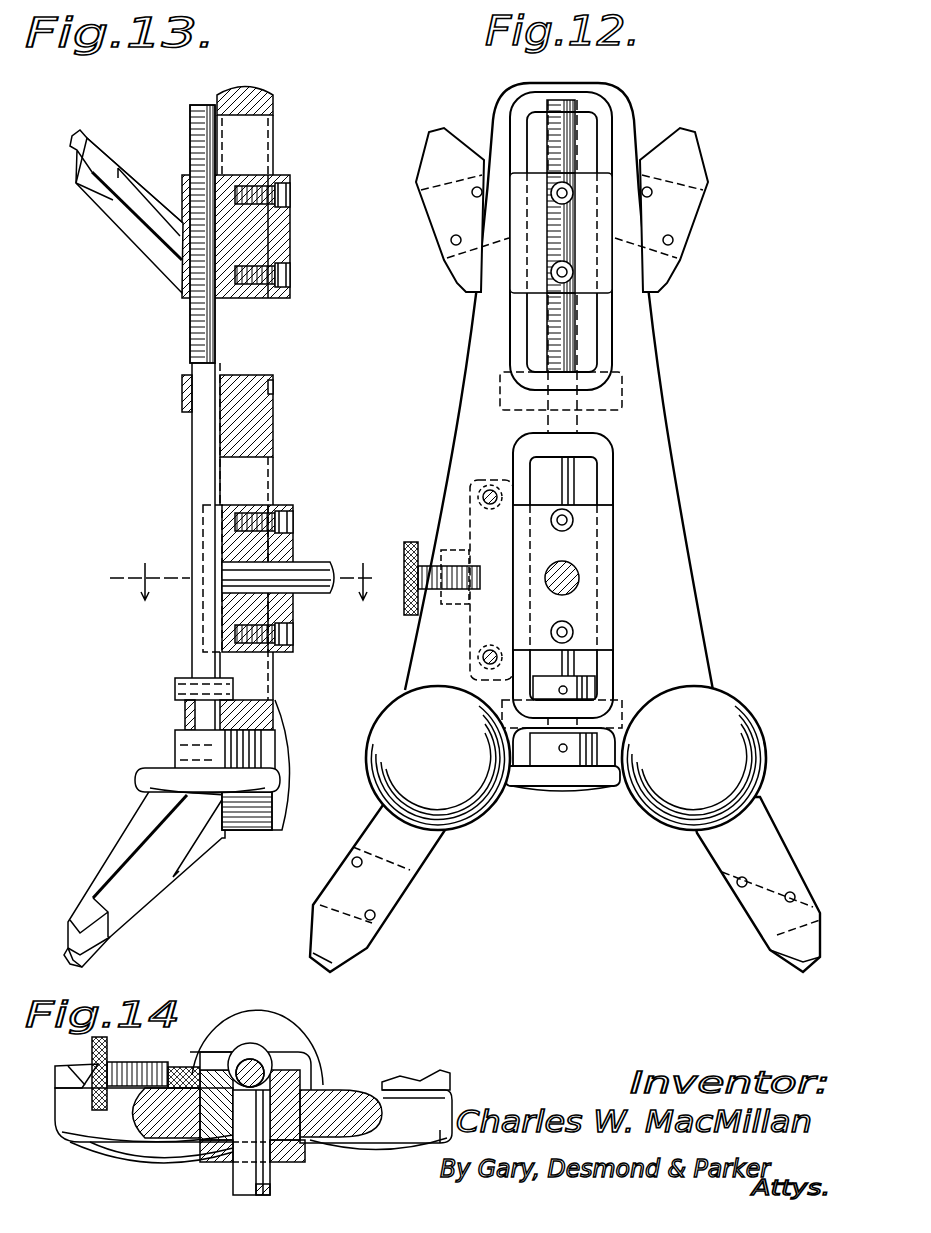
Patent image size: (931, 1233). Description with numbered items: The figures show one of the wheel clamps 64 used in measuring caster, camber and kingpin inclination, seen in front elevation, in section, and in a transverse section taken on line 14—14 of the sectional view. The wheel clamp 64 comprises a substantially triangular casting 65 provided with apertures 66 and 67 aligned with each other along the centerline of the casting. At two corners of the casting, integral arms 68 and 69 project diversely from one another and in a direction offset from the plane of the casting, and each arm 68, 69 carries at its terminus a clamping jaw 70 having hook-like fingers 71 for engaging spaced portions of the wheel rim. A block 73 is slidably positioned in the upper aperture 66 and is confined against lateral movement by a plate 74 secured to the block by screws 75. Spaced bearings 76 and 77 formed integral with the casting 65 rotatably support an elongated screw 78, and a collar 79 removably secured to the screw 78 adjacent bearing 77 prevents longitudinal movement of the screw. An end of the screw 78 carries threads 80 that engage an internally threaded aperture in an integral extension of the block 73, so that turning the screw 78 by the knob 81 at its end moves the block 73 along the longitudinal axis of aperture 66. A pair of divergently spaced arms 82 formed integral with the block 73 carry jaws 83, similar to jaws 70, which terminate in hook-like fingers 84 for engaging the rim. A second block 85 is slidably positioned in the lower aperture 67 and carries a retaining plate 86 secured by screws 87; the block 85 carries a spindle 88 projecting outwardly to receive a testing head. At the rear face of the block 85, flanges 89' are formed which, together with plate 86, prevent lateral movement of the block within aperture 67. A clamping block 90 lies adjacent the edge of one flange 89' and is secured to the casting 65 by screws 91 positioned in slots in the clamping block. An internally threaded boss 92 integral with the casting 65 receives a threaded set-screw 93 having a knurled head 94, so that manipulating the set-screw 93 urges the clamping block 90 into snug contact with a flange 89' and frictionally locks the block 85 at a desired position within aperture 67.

In FIG. 13, the section line 14— 14 is at (242, 567).
In FIG. 12, the wheel clamp 64 is at (702, 434).
In FIG. 12, the triangular casting 65 is at (655, 405).
In FIG. 12, the aperture 66 is at (585, 333).
In FIG. 12, the aperture 67 is at (585, 480).
In FIG. 12, the integral arm 68 is at (425, 848).
In FIG. 12, the integral arm 69 is at (705, 845).
In FIG. 13, the clamping jaw 70 is at (135, 935).
In FIG. 12, the clamping jaw 70 is at (355, 955).
In FIG. 13, the hook-like fingers 71 is at (66, 955).
In FIG. 14, the hook-like fingers 71 is at (419, 1085).
In FIG. 13, the block 73 is at (250, 236).
In FIG. 12, the block 73 is at (583, 205).
In FIG. 13, the plate 74 is at (282, 241).
In FIG. 13, the screws 75 is at (290, 190).
In FIG. 13, the bearing 76 is at (181, 392).
In FIG. 13, the bearing 77 is at (184, 712).
In FIG. 14, the bearing 77 is at (280, 1052).
In FIG. 13, the elongated screw 78 is at (191, 466).
In FIG. 14, the elongated screw 78 is at (256, 1060).
In FIG. 13, the collar 79 is at (177, 690).
In FIG. 12, the collar 79 is at (583, 678).
In FIG. 14, the collar 79 is at (250, 1068).
In FIG. 13, the threads 80 is at (195, 328).
In FIG. 13, the knob 81 is at (158, 782).
In FIG. 12, the knob 81 is at (548, 788).
In FIG. 13, the divergently spaced arms 82 is at (128, 225).
In FIG. 12, the divergently spaced arms 82 is at (688, 228).
In FIG. 13, the jaws 83 is at (103, 158).
In FIG. 12, the jaws 83 is at (705, 160).
In FIG. 14, the jaws 83 is at (240, 1172).
In FIG. 13, the hook-like fingers 84 is at (72, 148).
In FIG. 13, the second block 85 is at (253, 552).
In FIG. 12, the second block 85 is at (590, 563).
In FIG. 14, the second block 85 is at (322, 1082).
In FIG. 13, the retaining plate 86 is at (293, 606).
In FIG. 14, the retaining plate 86 is at (283, 1162).
In FIG. 13, the screws 87 is at (293, 518).
In FIG. 13, the spindle 88 is at (312, 563).
In FIG. 14, the flanges 89' is at (285, 1033).
In FIG. 14, the clamping block 90 is at (205, 1068).
In FIG. 14, the screws 91 is at (185, 1086).
In FIG. 14, the internally threaded boss 92 is at (165, 1072).
In FIG. 14, the set-screw 93 is at (82, 1142).
In FIG. 12, the knurled head 94 is at (411, 540).
In FIG. 14, the knurled head 94 is at (92, 1045).